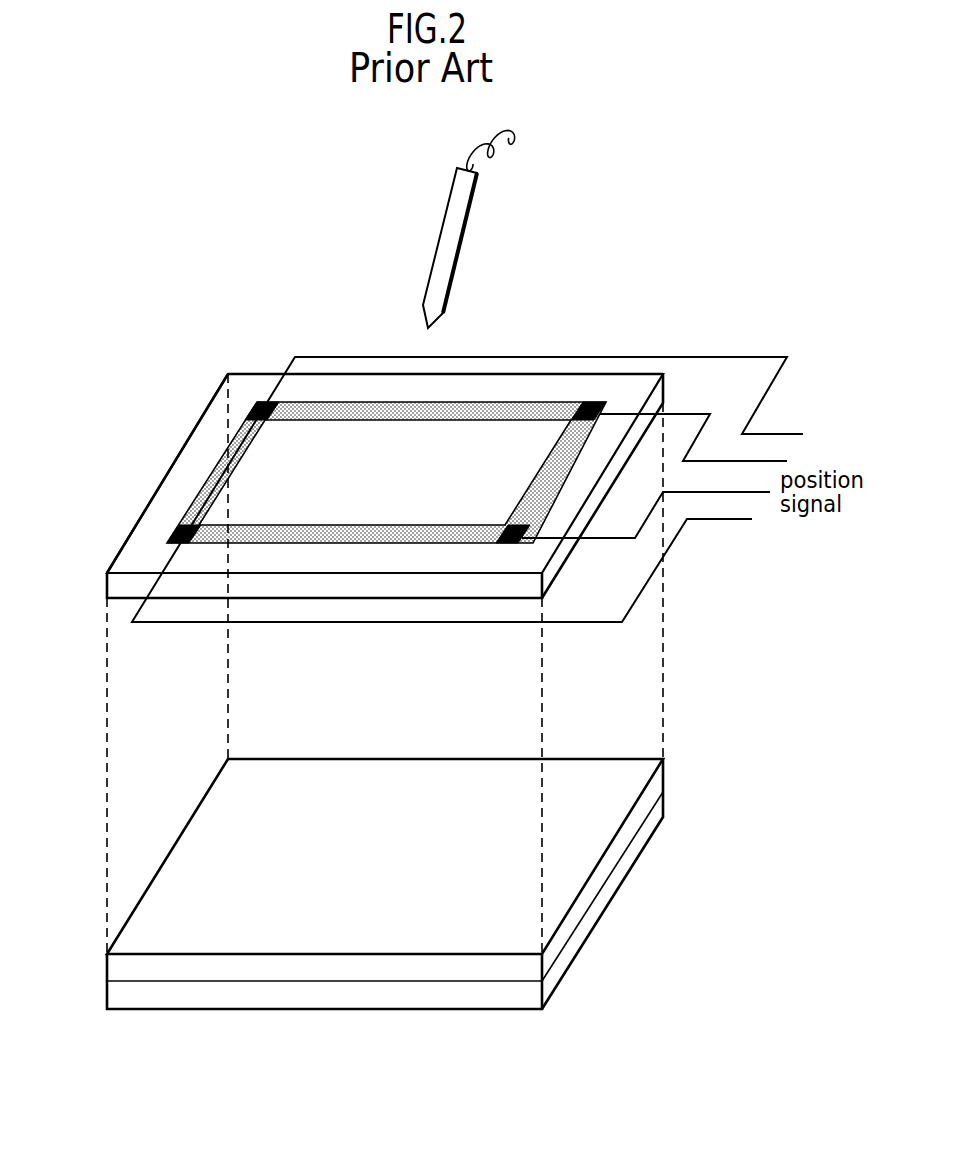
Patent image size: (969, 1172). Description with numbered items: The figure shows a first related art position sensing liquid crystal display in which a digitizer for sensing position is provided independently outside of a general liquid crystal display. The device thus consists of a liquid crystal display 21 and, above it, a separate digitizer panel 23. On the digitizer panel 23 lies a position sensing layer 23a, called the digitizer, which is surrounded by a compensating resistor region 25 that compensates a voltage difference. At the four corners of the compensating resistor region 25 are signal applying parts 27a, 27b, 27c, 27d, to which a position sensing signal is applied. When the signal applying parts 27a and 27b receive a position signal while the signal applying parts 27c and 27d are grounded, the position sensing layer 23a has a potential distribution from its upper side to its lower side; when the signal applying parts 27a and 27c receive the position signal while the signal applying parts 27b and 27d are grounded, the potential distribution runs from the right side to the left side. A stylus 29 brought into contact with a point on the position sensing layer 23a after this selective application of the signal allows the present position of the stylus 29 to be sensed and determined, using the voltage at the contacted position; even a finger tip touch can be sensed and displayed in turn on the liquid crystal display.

The liquid crystal display 21 is at (640, 800).
The digitizer panel 23 is at (157, 520).
The position sensing layer 23a is at (250, 485).
The compensating resistor region 25 is at (238, 442).
The signal applying part 27a is at (262, 402).
The signal applying part 27b is at (587, 403).
The signal applying part 27c is at (177, 533).
The signal applying part 27d is at (510, 546).
The stylus 29 is at (455, 227).